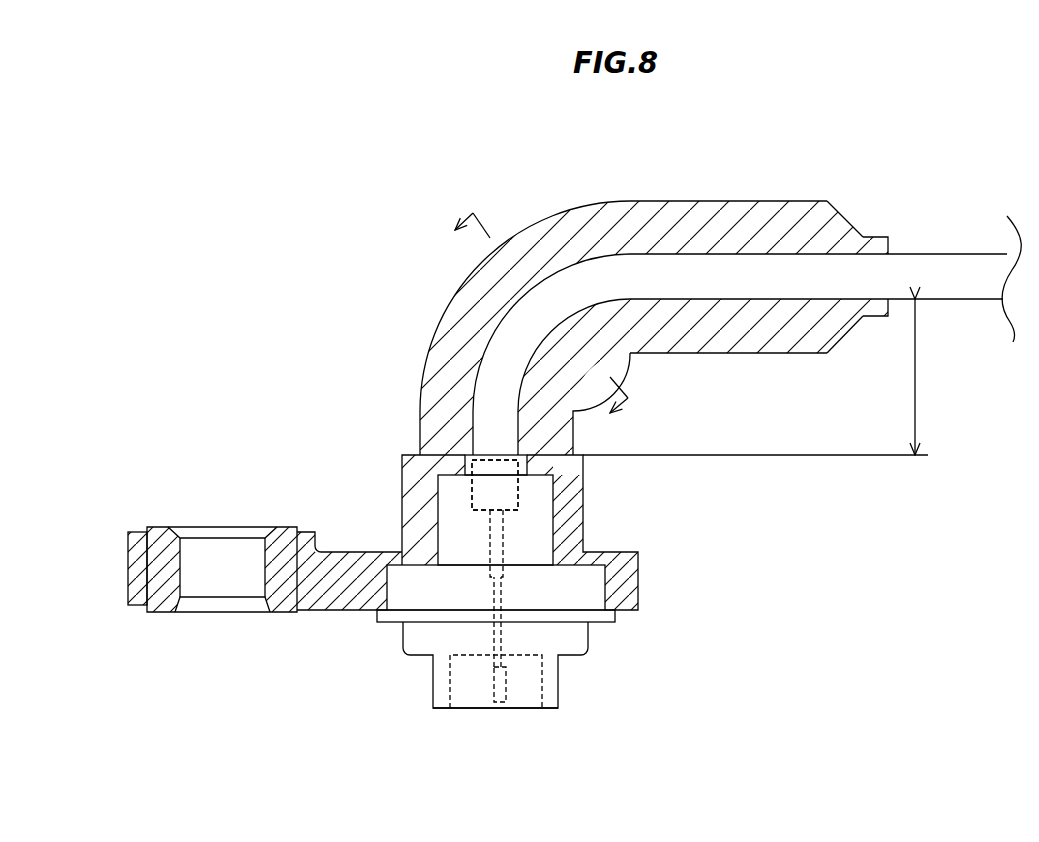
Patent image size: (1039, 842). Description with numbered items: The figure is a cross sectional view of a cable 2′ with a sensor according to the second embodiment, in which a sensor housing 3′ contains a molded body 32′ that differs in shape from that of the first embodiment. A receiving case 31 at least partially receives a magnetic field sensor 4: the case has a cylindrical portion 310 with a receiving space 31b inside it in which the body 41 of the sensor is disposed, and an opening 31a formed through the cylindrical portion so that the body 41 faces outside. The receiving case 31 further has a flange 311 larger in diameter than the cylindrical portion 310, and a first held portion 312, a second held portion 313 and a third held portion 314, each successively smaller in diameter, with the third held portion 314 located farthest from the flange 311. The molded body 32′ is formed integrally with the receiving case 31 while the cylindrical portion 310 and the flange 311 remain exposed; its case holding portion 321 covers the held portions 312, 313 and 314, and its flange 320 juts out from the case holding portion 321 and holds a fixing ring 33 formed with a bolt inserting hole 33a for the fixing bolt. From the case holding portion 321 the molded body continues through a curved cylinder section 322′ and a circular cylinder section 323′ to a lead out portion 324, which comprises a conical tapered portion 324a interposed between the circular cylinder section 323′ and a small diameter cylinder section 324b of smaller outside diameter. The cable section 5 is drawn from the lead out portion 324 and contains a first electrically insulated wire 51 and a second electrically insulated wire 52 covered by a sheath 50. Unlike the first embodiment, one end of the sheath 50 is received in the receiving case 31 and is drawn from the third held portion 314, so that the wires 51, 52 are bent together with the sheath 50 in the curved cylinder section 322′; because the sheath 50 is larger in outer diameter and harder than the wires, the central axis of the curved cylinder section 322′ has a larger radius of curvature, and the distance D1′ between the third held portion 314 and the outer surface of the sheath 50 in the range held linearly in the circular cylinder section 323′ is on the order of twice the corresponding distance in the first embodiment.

The cable with a sensor 2′ is at (322, 213).
The sensor housing 3′ is at (425, 233).
The molded body 32′ is at (412, 343).
The curved cylinder section 322′ is at (458, 312).
The circular cylinder section 323′ is at (700, 357).
The lead out portion 324 is at (845, 333).
The tapered portion 324a is at (838, 212).
The small diameter cylinder section 324b is at (872, 235).
The flange 320 is at (340, 547).
The case holding portion 321 is at (402, 523).
The third held portion 314 is at (472, 465).
The sheath 50 is at (735, 250).
The cable section 5 is at (977, 233).
The fixing ring 33 is at (165, 552).
The bolt inserting hole 33a is at (182, 560).
The receiving case 31 is at (396, 664).
The cylindrical portion 310 is at (550, 673).
The flange 311 is at (602, 623).
The first held portion 312 is at (563, 575).
The second held portion 313 is at (547, 493).
The opening 31a is at (533, 713).
The receiving space 31b is at (468, 692).
The magnetic field sensor 4 is at (493, 703).
The body 41 is at (503, 703).
The first electrically insulated wire 51 is at (488, 532).
The second electrically insulated wire 52 is at (495, 485).
The distance D1′ is at (771, 377).